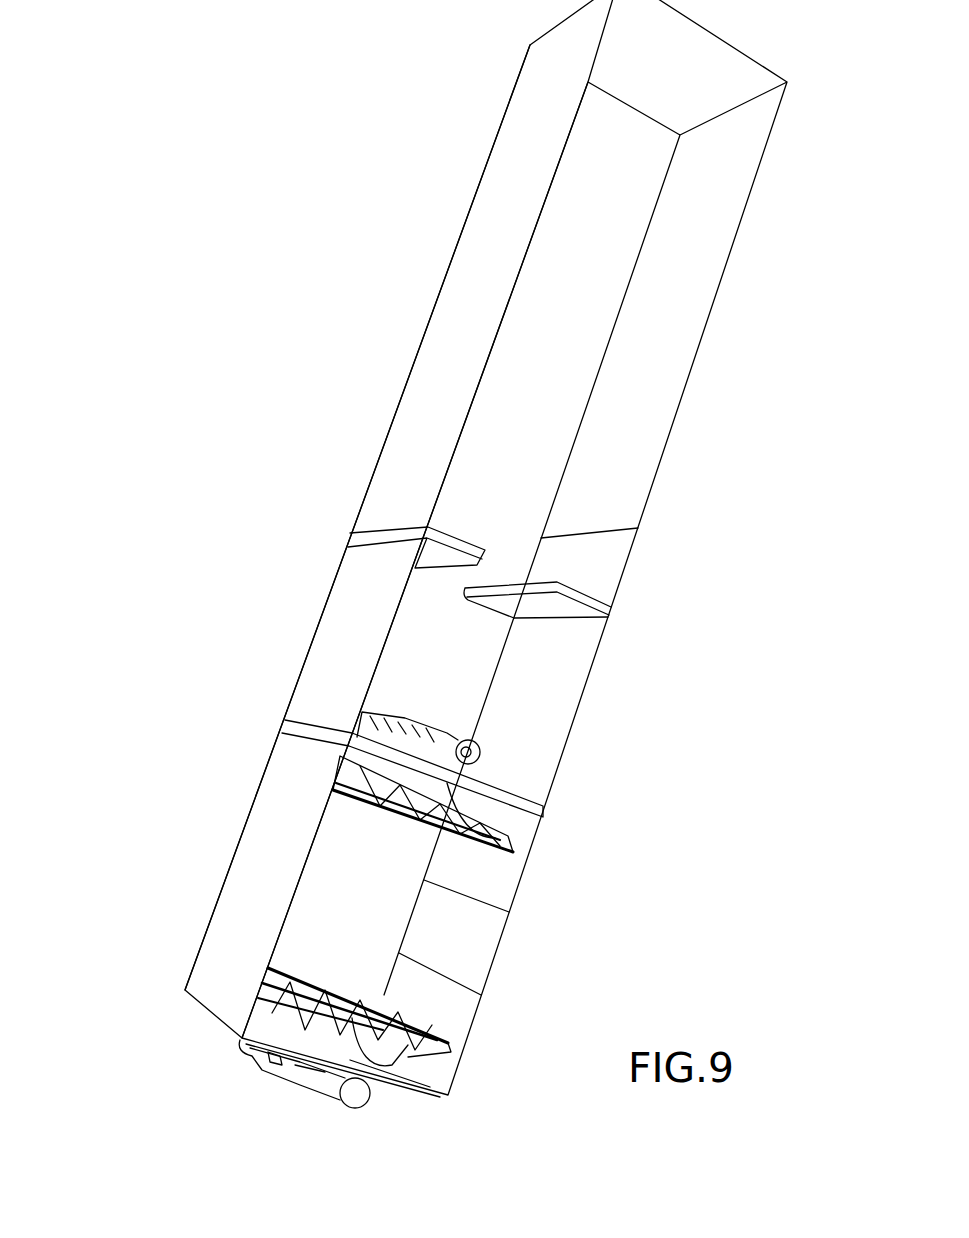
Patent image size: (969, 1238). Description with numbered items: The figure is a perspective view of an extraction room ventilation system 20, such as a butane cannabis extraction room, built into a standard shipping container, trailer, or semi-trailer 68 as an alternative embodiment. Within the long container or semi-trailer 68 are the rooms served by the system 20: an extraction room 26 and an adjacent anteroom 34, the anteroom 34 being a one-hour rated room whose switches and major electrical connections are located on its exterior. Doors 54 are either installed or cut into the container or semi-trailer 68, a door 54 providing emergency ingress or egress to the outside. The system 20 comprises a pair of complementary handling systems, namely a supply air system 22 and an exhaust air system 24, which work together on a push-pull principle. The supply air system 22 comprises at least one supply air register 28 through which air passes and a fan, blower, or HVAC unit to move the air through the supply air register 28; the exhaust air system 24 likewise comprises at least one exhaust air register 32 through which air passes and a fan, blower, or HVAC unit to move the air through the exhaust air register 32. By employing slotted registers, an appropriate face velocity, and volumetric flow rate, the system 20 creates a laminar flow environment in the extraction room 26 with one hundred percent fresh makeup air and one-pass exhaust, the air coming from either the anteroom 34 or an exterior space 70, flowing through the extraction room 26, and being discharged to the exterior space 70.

The extraction room ventilation system 20 is at (163, 98).
The supply air system 22 is at (338, 718).
The exhaust air system 24 is at (398, 1054).
The extraction room 26 is at (373, 925).
The supply air register 28 is at (337, 790).
The exhaust air register 32 is at (390, 1040).
The anteroom 34 is at (447, 676).
The door 54 is at (583, 558).
The shipping container, trailer, or semi-trailer 68 is at (308, 385).
The exterior space 70 is at (772, 862).